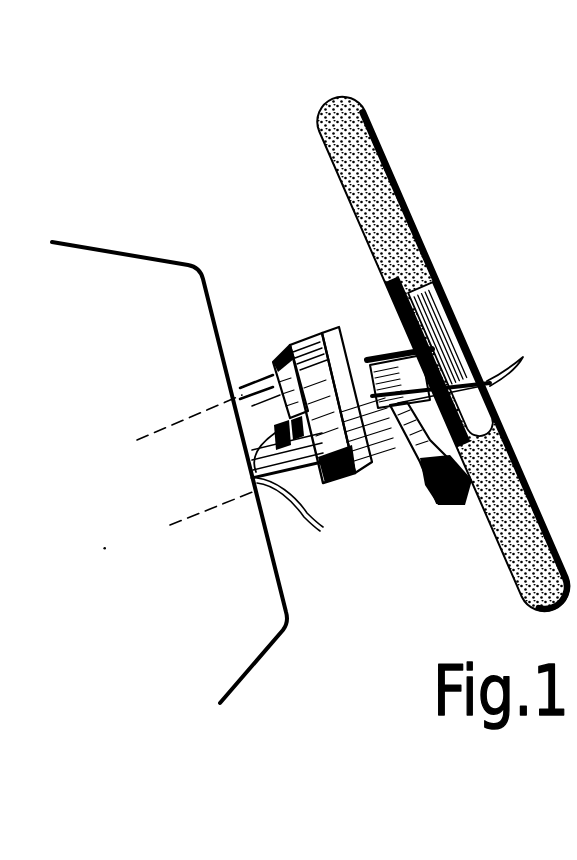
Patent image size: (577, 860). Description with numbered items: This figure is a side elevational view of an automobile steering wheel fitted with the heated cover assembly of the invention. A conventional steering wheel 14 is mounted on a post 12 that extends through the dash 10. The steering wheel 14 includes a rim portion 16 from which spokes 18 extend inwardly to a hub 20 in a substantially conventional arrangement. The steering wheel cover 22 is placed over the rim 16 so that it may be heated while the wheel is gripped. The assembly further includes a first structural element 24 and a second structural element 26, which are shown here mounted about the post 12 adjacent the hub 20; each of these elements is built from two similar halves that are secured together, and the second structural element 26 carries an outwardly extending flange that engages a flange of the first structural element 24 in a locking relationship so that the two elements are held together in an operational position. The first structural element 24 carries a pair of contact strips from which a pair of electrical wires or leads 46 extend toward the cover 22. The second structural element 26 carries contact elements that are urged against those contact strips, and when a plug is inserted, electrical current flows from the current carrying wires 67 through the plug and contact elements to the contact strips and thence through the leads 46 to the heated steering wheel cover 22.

The dash 10 is at (151, 238).
The post 12 is at (230, 370).
The steering wheel 14 is at (369, 90).
The rim portion 16 is at (462, 338).
The spokes 18 is at (521, 366).
The hub 20 is at (340, 347).
The steering wheel cover 22 is at (440, 281).
The first structural element 24 is at (372, 467).
The second structural element 26 is at (273, 357).
The electrical wires or leads 46 is at (445, 458).
The current carrying wires 67 is at (331, 532).